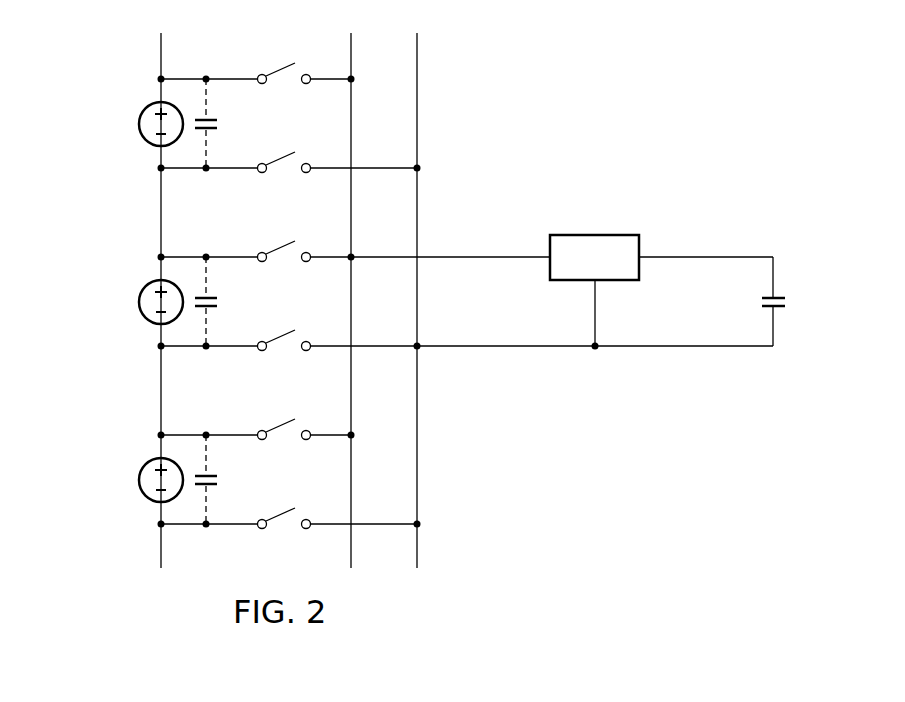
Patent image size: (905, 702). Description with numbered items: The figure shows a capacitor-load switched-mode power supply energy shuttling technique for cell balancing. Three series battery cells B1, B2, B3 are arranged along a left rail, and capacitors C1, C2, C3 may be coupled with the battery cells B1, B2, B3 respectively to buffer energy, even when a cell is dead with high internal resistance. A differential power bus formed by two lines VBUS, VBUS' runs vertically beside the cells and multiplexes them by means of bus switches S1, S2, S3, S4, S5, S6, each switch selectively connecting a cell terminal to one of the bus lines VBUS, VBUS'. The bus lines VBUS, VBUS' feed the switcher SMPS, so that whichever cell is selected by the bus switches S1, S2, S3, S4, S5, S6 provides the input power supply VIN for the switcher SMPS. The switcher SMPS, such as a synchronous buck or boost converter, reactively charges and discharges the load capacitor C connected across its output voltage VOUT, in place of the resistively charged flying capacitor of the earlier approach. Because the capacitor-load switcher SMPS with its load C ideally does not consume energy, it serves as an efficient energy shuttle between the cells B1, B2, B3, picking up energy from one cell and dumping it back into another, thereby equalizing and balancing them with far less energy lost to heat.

The battery cell B1 is at (145, 124).
The battery cell B2 is at (145, 302).
The battery cell B3 is at (145, 480).
The capacitor C1 is at (223, 123).
The capacitor C2 is at (223, 301).
The capacitor C3 is at (223, 479).
The bus switch S1 is at (284, 93).
The bus switch S2 is at (284, 182).
The bus switch S3 is at (284, 271).
The bus switch S4 is at (284, 360).
The bus switch S5 is at (284, 449).
The bus switch S6 is at (284, 538).
The switched-mode power supply SMPS is at (594, 290).
The load capacitor C is at (723, 301).
The differential power bus line VBUS is at (344, 284).
The differential power bus line VBUS' is at (409, 284).
The input power supply VIN is at (500, 324).
The output voltage VOUT is at (700, 324).